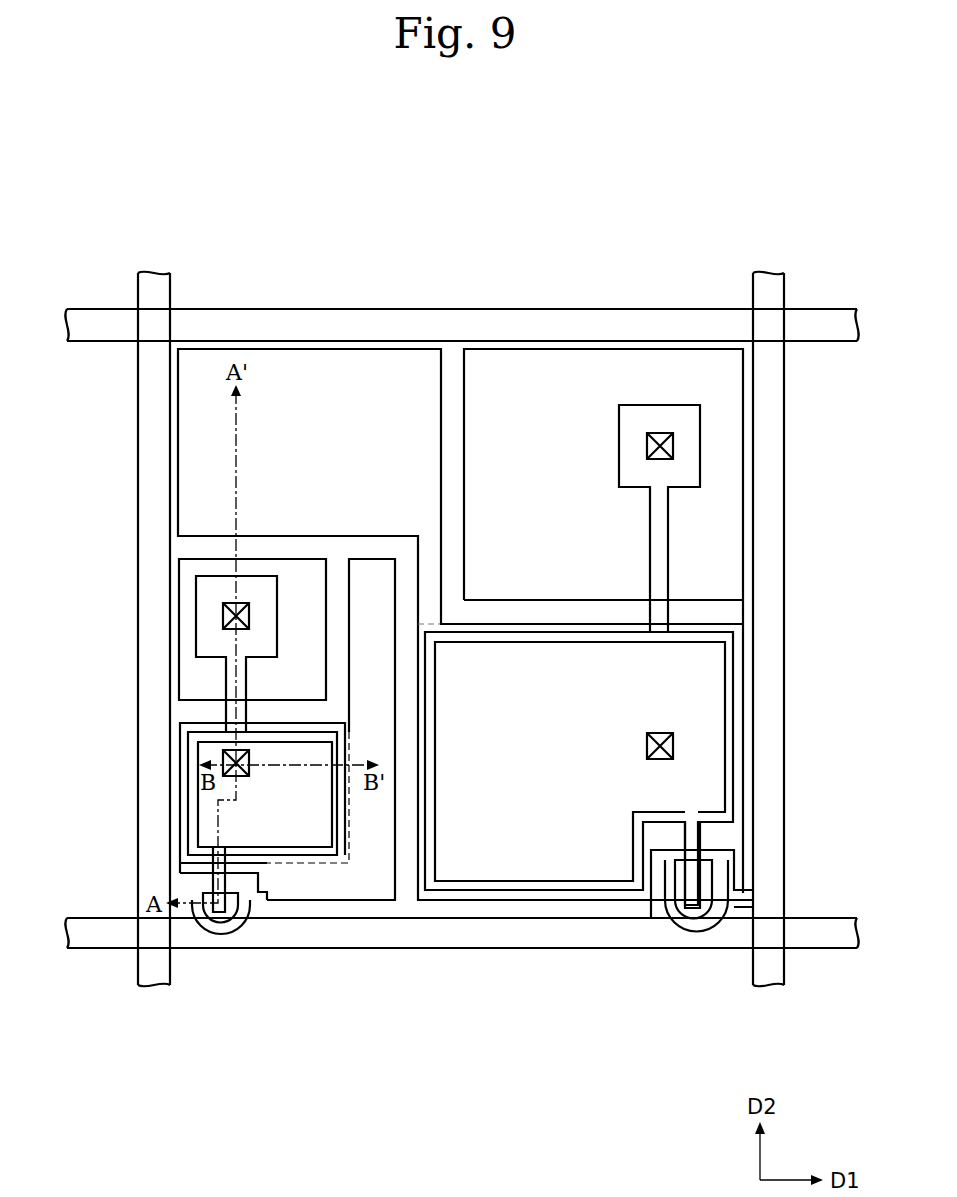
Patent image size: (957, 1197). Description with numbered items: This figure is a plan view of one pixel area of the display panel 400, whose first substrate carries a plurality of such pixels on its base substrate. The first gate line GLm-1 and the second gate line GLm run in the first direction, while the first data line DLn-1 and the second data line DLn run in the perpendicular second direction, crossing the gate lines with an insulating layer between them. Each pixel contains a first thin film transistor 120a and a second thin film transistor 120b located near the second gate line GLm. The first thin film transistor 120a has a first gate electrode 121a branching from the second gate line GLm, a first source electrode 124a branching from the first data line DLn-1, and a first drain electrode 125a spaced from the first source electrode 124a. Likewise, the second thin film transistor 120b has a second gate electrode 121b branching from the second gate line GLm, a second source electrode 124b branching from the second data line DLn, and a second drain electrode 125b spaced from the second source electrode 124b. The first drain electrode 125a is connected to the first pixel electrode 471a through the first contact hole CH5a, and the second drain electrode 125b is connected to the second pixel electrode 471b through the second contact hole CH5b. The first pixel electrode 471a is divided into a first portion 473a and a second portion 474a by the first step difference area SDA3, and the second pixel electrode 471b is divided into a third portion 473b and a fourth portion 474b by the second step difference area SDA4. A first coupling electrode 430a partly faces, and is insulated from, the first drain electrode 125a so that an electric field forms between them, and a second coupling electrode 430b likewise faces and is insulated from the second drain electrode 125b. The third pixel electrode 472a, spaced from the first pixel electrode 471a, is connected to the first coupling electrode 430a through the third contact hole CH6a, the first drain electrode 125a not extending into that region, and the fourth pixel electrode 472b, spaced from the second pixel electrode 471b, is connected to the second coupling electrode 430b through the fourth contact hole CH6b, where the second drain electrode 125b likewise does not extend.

The display panel 400 is at (688, 208).
The first gate line GLm-1 is at (90, 315).
The second gate line GLm is at (90, 928).
The first data line DLn-1 is at (150, 290).
The second data line DLn is at (766, 290).
The first thin film transistor 120a is at (239, 977).
The first gate electrode 121a is at (255, 905).
The first source electrode 124a is at (238, 984).
The first drain electrode 125a is at (195, 908).
The first pixel electrode 471a is at (510, 1040).
The first portion 473a is at (298, 863).
The second portion 474a is at (372, 855).
The first step difference area SDA3 is at (330, 863).
The first contact hole CH5a is at (222, 758).
The third contact hole CH6a is at (222, 612).
The first coupling electrode 430a is at (205, 641).
The third pixel electrode 472a is at (195, 678).
The second thin film transistor 120b is at (686, 951).
The second gate electrode 121b is at (727, 912).
The second source electrode 124b is at (687, 925).
The second drain electrode 125b is at (690, 892).
The second pixel electrode 471b is at (540, 467).
The third portion 473b is at (500, 630).
The fourth portion 474b is at (415, 465).
The second step difference area SDA4 is at (422, 622).
The second contact hole CH5b is at (674, 746).
The fourth contact hole CH6b is at (674, 443).
The second coupling electrode 430b is at (728, 685).
The fourth pixel electrode 472b is at (722, 518).